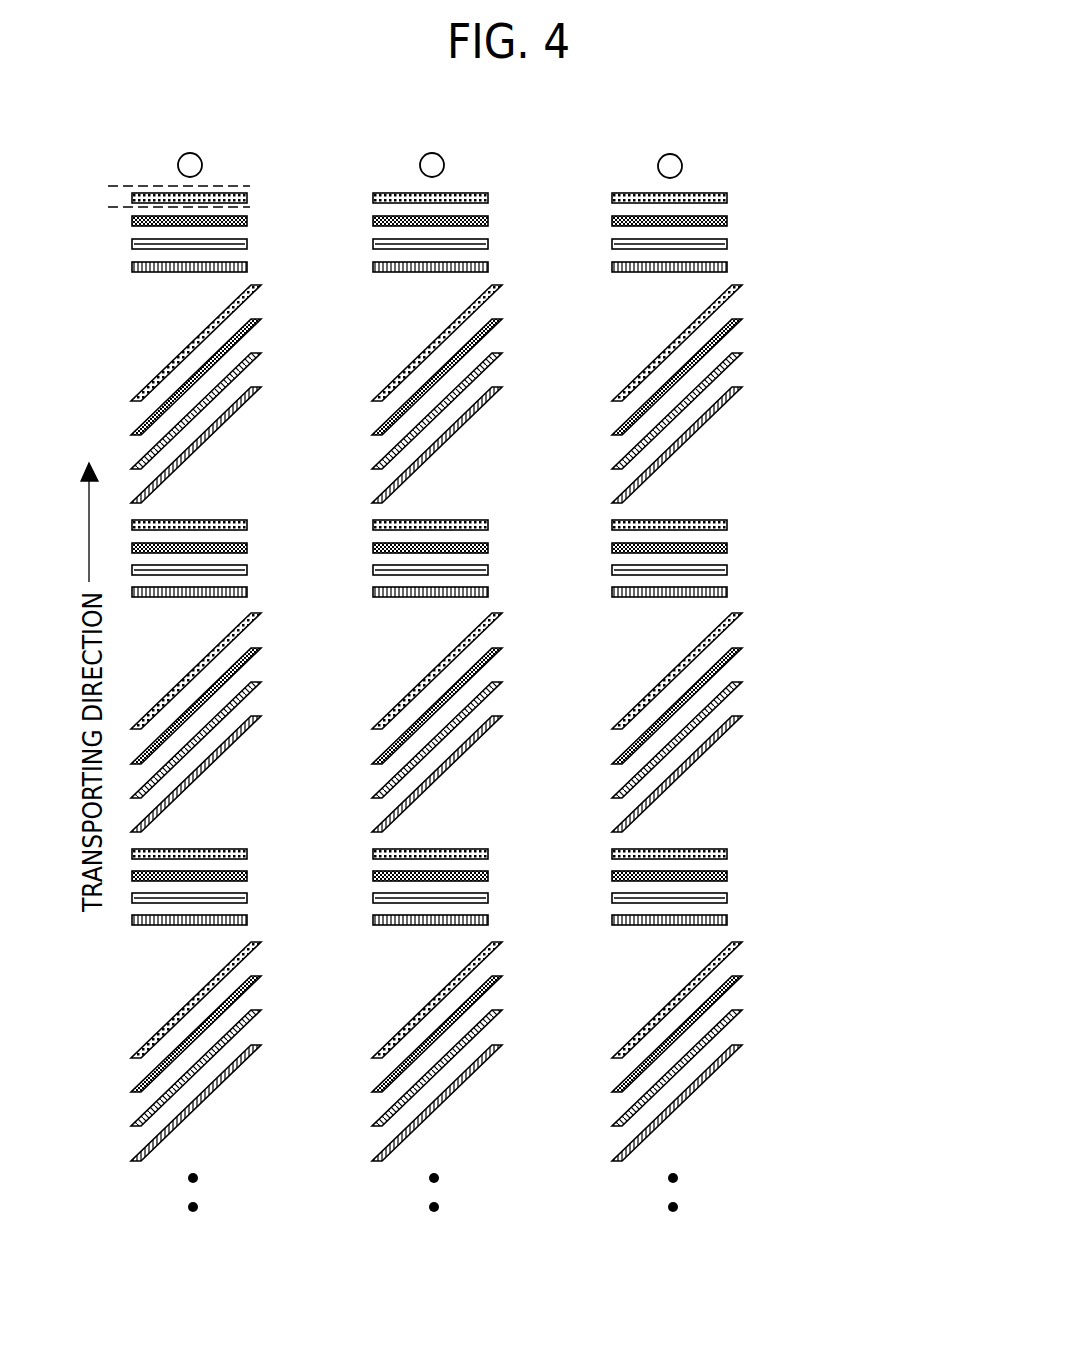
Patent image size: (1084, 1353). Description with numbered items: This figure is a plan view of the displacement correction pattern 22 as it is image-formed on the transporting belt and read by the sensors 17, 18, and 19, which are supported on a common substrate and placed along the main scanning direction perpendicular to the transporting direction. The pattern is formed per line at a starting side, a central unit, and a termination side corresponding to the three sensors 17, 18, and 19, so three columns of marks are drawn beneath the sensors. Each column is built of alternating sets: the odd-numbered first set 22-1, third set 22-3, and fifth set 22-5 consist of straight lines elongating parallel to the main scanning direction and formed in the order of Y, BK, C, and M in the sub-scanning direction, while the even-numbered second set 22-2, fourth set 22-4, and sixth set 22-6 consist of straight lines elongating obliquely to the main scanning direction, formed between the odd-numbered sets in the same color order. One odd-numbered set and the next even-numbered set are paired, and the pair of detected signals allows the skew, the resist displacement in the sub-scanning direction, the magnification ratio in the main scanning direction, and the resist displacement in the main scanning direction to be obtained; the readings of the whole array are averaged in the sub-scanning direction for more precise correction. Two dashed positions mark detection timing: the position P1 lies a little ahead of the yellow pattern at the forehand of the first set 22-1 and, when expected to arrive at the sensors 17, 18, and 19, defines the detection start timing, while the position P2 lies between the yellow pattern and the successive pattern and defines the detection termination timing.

The sensor 17 is at (193, 153).
The sensor 18 is at (435, 153).
The sensor 19 is at (673, 153).
The displacement correction pattern 22 is at (152, 163).
The first set 22-1 is at (757, 280).
The second set 22-2 is at (757, 517).
The third set 22-3 is at (757, 605).
The fourth set 22-4 is at (757, 835).
The fifth set 22-5 is at (757, 927).
The sixth set 22-6 is at (757, 1169).
The detection start position P1 is at (164, 187).
The detection termination position P2 is at (164, 207).